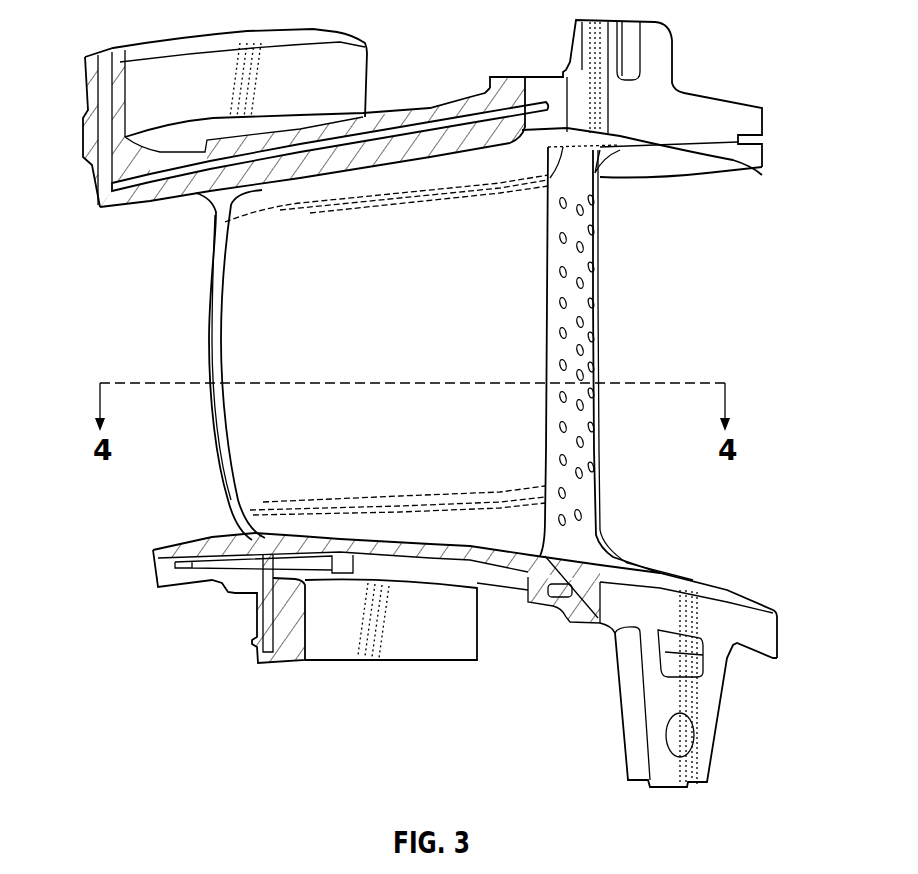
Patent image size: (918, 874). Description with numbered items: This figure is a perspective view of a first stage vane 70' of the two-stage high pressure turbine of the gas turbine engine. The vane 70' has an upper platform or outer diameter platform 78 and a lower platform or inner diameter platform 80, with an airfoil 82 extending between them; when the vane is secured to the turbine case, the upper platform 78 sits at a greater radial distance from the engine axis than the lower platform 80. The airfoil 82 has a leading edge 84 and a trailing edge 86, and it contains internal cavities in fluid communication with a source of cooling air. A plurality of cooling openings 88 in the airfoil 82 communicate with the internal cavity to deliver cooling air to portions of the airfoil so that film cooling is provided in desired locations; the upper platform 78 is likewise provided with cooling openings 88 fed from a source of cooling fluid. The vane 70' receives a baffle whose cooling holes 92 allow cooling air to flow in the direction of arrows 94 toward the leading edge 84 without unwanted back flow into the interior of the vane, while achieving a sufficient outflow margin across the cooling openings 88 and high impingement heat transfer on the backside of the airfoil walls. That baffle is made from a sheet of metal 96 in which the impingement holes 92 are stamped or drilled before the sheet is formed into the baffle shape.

The first stage vane 70' is at (435, 403).
The upper platform 78 is at (652, 113).
The lower platform 80 is at (693, 580).
The airfoil 82 is at (293, 455).
The leading edge 84 is at (583, 418).
The trailing edge 86 is at (207, 340).
The cooling openings 88 is at (585, 245).
The cooling holes 92 is at (710, 143).
The arrows 94 is at (88, 88).
The sheet of metal 96 is at (397, 120).